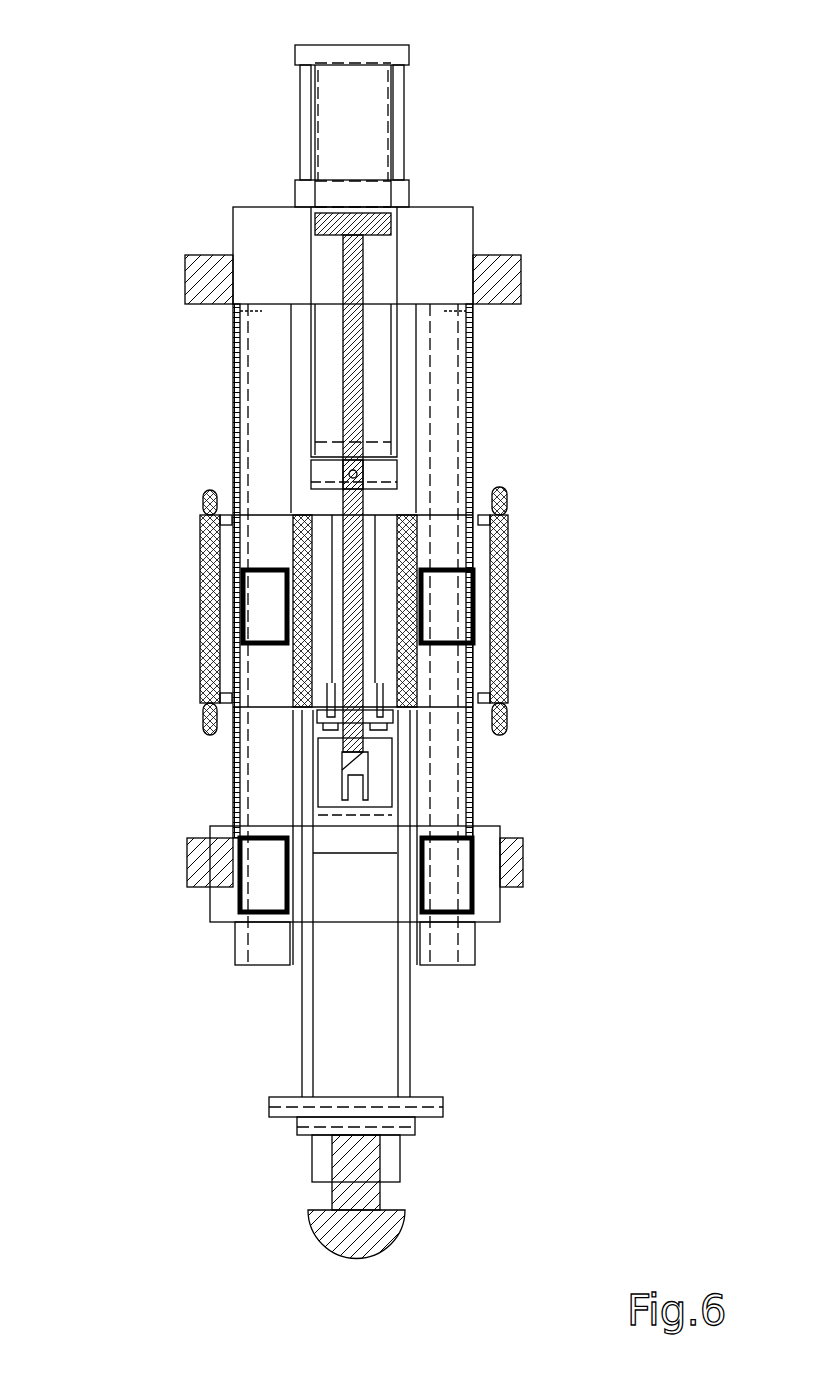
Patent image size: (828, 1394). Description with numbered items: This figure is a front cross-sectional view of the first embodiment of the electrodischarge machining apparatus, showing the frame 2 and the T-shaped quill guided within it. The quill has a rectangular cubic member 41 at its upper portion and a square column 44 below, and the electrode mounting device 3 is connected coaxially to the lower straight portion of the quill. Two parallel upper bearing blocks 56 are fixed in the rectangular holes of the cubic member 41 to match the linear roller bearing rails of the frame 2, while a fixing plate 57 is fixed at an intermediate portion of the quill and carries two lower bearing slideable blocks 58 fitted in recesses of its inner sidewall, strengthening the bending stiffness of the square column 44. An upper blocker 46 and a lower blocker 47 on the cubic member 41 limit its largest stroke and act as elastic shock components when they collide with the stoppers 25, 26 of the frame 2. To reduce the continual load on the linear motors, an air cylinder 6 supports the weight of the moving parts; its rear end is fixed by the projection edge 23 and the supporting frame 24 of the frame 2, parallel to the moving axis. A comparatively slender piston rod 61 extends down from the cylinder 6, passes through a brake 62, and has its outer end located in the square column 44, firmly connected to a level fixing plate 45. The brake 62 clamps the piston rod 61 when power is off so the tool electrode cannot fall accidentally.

The frame 2 is at (269, 250).
The electrode mounting device 3 is at (269, 1097).
The air cylinder 6 is at (312, 375).
The projection edge 23 is at (323, 57).
The supporting frame 24 is at (306, 121).
The stopper 25 is at (508, 273).
The stopper 26 is at (510, 873).
The rectangular cubic member 41 is at (200, 553).
The square column 44 is at (237, 965).
The level fixing plate 45 is at (350, 834).
The blocker 46 is at (507, 493).
The blocker 47 is at (507, 722).
The upper bearing block 56 is at (268, 588).
The fixing plate 57 is at (235, 921).
The lower bearing slideable block 58 is at (267, 865).
The piston rod 61 is at (343, 663).
The brake 62 is at (327, 468).